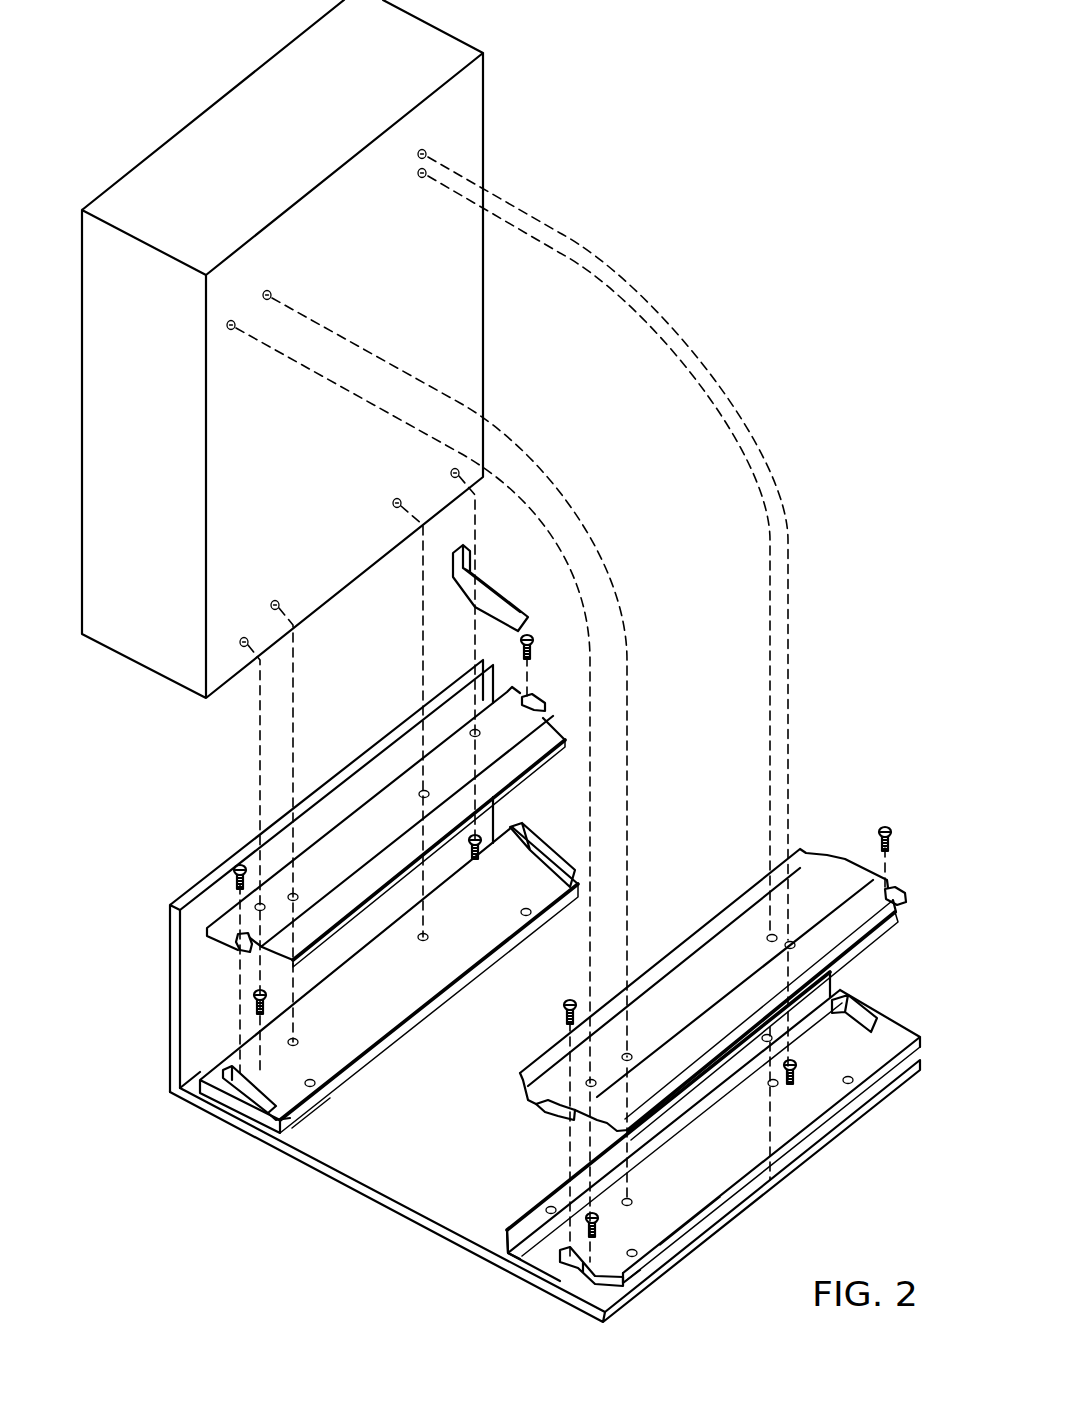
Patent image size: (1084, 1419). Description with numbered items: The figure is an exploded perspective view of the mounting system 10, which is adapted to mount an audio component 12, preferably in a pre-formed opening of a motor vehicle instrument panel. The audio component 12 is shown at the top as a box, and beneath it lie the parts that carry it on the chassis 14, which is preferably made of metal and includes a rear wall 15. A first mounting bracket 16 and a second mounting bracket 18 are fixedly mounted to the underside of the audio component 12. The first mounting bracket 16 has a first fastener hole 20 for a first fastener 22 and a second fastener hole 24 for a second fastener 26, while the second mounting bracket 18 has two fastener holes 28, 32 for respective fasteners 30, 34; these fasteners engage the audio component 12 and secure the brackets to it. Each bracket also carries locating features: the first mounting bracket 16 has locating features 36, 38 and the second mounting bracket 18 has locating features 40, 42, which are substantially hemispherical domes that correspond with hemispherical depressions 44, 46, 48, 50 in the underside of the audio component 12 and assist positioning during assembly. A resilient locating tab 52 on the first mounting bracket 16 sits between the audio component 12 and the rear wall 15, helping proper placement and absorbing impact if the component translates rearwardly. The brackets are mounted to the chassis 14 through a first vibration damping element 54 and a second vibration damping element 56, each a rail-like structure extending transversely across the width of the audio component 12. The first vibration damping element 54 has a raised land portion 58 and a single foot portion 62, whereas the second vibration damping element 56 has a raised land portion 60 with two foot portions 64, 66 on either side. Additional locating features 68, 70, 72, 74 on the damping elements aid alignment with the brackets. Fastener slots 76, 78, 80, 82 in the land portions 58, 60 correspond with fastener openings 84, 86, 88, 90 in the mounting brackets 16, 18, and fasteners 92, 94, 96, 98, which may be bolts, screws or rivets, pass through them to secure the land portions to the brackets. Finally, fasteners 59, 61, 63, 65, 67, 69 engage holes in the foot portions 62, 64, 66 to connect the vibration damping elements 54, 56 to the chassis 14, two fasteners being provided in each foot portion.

The mounting system 10 is at (838, 737).
The audio component 12 is at (234, 122).
The chassis 14 is at (507, 1007).
The rear wall 15 is at (169, 935).
The first mounting bracket 16 is at (386, 778).
The second mounting bracket 18 is at (651, 952).
The first fastener hole 20 is at (260, 903).
The first fastener 22 is at (254, 995).
The second fastener hole 24 is at (474, 730).
The second fastener 26 is at (481, 838).
The fastener hole 28 is at (587, 1082).
The fastener 30 is at (530, 1272).
The fastener hole 32 is at (786, 946).
The fastener 34 is at (796, 1071).
The locating feature 36 is at (294, 901).
The locating feature 38 is at (420, 797).
The locating feature 40 is at (628, 1062).
The locating feature 42 is at (770, 934).
The hemispherical depression 44 is at (275, 601).
The hemispherical depression 46 is at (396, 499).
The hemispherical depression 48 is at (268, 291).
The hemispherical depression 50 is at (420, 178).
The locating tab 52 is at (514, 598).
The first vibration damping element 54 is at (203, 1050).
The second vibration damping element 56 is at (695, 1159).
The raised land portion 58 is at (197, 1098).
The fastener 59 is at (313, 1086).
The raised land portion 60 is at (683, 1162).
The fastener 61 is at (529, 915).
The foot portion 62 is at (292, 1104).
The fastener 63 is at (552, 1206).
The foot portion 64 is at (507, 1231).
The fastener 65 is at (620, 1280).
The foot portion 66 is at (707, 1193).
The fastener 67 is at (765, 1036).
The locating feature 68 is at (296, 1045).
The fastener 69 is at (792, 1102).
The locating feature 70 is at (426, 940).
The locating feature 72 is at (630, 1207).
The locating feature 74 is at (776, 1086).
The fastener slot 76 is at (238, 1085).
The fastener slot 78 is at (536, 862).
The fastener slot 80 is at (560, 1268).
The fastener slot 82 is at (860, 1010).
The fastener opening 84 is at (238, 948).
The fastener opening 86 is at (537, 703).
The fastener opening 88 is at (550, 1117).
The fastener opening 90 is at (900, 903).
The fastener 92 is at (234, 868).
The fastener 94 is at (538, 642).
The fastener 96 is at (563, 1005).
The fastener 98 is at (884, 827).